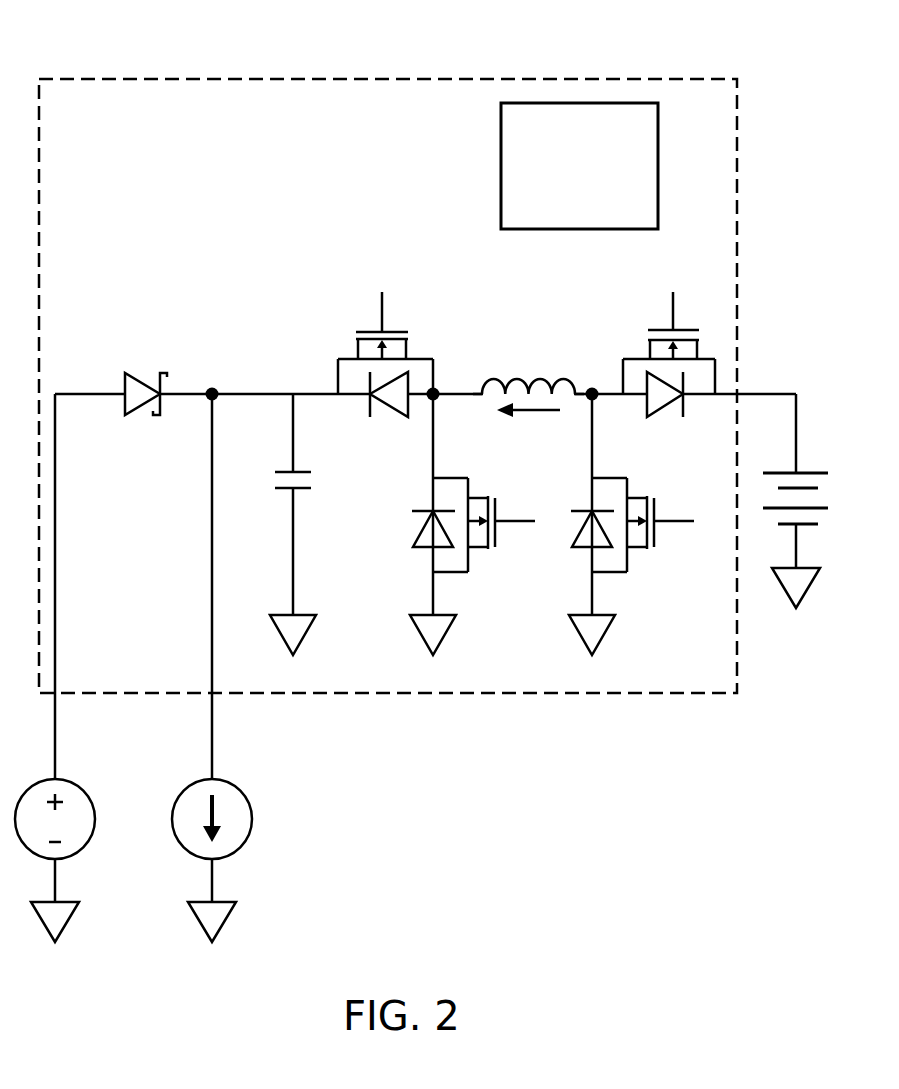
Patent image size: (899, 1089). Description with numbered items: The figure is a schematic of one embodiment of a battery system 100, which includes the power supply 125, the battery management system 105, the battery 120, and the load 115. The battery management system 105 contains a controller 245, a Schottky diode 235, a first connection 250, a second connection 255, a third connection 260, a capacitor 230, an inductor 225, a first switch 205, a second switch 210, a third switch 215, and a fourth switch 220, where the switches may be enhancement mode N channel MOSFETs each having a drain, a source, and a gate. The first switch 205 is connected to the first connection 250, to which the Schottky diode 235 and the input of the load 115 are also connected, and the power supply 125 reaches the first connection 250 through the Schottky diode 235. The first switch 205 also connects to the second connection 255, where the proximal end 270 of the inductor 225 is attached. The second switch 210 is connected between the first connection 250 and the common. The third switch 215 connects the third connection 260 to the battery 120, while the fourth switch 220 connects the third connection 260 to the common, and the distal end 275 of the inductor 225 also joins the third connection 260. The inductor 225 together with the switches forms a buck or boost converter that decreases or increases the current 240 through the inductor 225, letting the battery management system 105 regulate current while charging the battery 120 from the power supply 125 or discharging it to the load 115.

The battery system 100 is at (80, 58).
The battery management system 105 is at (205, 208).
The load 115 is at (230, 782).
The battery 120 is at (808, 525).
The power supply 125 is at (70, 782).
The first switch 205 is at (360, 333).
The second switch 210 is at (472, 547).
The third switch 215 is at (677, 330).
The fourth switch 220 is at (615, 478).
The inductor 225 is at (541, 377).
The capacitor 230 is at (310, 472).
The Schottky diode 235 is at (135, 374).
The current 240 is at (520, 412).
The controller 245 is at (579, 166).
The first connection 250 is at (212, 401).
The second connection 255 is at (443, 391).
The third connection 260 is at (594, 392).
The proximal end 270 is at (473, 390).
The distal end 275 is at (576, 390).